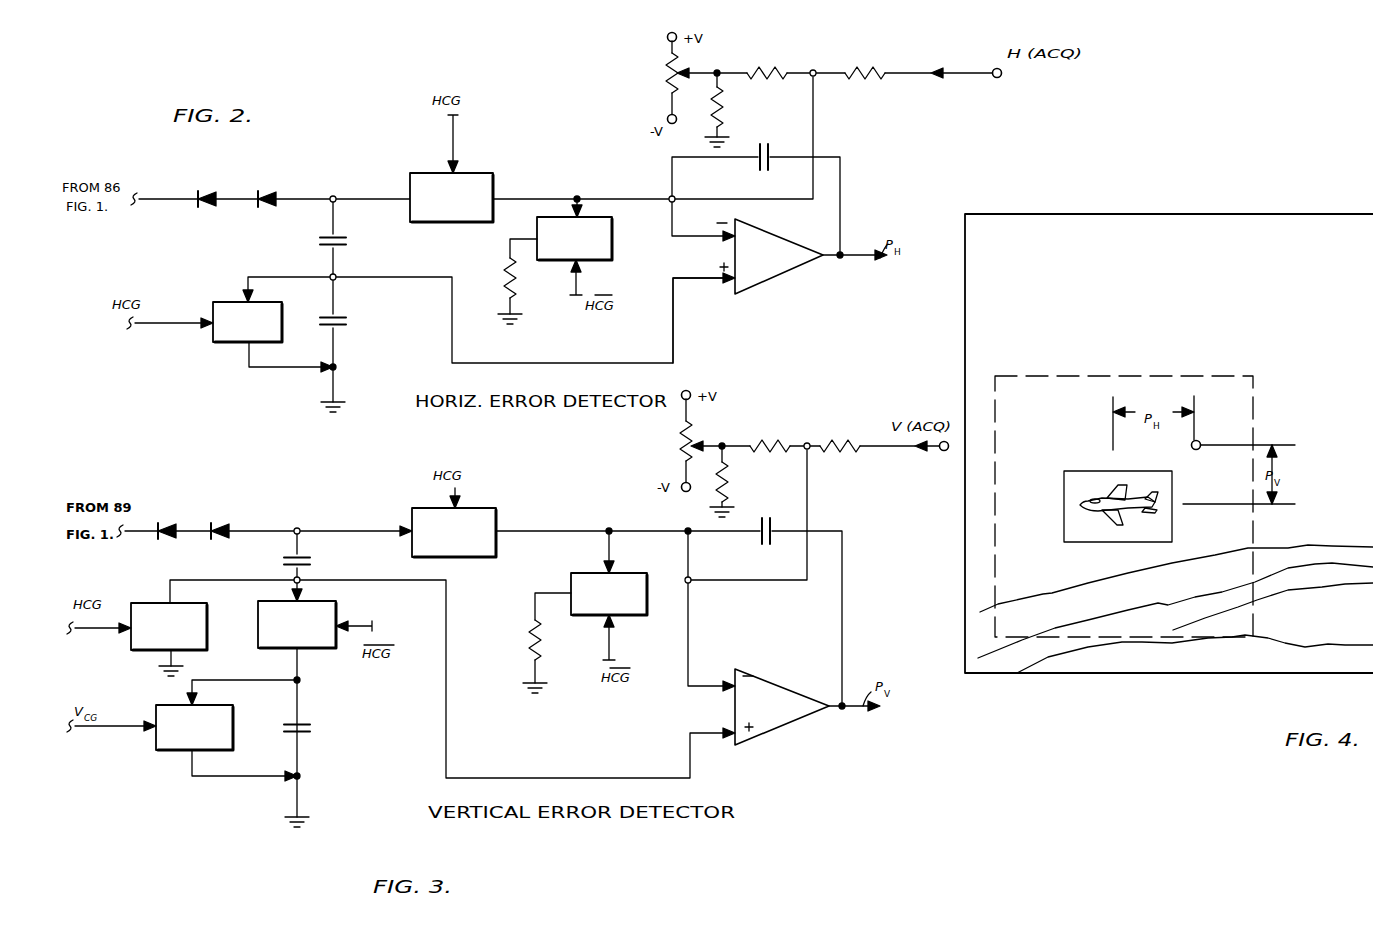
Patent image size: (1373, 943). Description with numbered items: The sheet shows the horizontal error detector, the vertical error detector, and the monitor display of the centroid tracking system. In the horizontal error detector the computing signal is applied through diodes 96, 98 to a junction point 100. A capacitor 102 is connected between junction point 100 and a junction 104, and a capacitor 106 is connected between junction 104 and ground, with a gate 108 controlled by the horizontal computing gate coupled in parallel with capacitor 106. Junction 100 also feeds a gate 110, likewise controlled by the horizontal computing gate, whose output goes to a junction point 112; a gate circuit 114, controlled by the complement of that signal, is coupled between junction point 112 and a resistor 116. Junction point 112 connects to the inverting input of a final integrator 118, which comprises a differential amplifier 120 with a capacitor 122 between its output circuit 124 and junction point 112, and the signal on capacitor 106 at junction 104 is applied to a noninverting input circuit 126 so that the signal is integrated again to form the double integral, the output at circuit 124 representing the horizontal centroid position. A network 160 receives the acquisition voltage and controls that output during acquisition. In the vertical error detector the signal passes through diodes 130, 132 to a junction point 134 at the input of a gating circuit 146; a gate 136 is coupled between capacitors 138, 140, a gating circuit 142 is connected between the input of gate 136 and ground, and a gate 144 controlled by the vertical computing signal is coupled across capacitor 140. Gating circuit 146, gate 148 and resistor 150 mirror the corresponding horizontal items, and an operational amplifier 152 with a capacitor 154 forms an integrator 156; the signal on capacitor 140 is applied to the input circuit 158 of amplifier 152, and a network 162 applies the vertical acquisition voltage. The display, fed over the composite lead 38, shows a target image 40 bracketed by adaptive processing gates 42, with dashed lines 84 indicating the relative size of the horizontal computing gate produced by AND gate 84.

In FIG. 2, the diode 96 is at (214, 199).
In FIG. 2, the diode 98 is at (274, 199).
In FIG. 2, the junction point 100 is at (333, 199).
In FIG. 2, the capacitor 102 is at (316, 243).
In FIG. 2, the junction 104 is at (336, 277).
In FIG. 2, the capacitor 106 is at (352, 318).
In FIG. 2, the gate 108 is at (221, 340).
In FIG. 2, the gate 110 is at (493, 173).
In FIG. 2, the junction point 112 is at (667, 192).
In FIG. 2, the gate circuit 114 is at (612, 221).
In FIG. 2, the resistor 116 is at (506, 268).
In FIG. 2, the final integrator 118 is at (852, 187).
In FIG. 2, the differential amplifier 120 is at (777, 267).
In FIG. 2, the capacitor 122 is at (770, 144).
In FIG. 2, the output circuit 124 is at (840, 260).
In FIG. 2, the noninverting input circuit 126 is at (706, 282).
In FIG. 2, the network 160 is at (832, 60).
In FIG. 3, the diode 130 is at (172, 531).
In FIG. 3, the diode 132 is at (226, 531).
In FIG. 3, the junction point 134 is at (298, 529).
In FIG. 3, the gate 136 is at (339, 603).
In FIG. 3, the capacitor 138 is at (315, 556).
In FIG. 3, the capacitor 140 is at (317, 722).
In FIG. 3, the gating circuit 142 is at (139, 602).
In FIG. 3, the gate 144 is at (170, 741).
In FIG. 3, the gating circuit 146 is at (496, 508).
In FIG. 3, the gate 148 is at (591, 562).
In FIG. 3, the resistor 150 is at (527, 634).
In FIG. 3, the operational amplifier 152 is at (789, 714).
In FIG. 3, the capacitor 154 is at (770, 514).
In FIG. 3, the integrator 156 is at (851, 605).
In FIG. 3, the input circuit 158 is at (666, 762).
In FIG. 3, the network 162 is at (822, 435).
In FIG. 4, the composite lead 38 is at (1208, 382).
In FIG. 4, the target image 40 is at (1128, 497).
In FIG. 4, the adaptive processing gates 42 is at (1083, 538).
In FIG. 4, the AND gate / HCG gate dashed lines 84 is at (1032, 375).